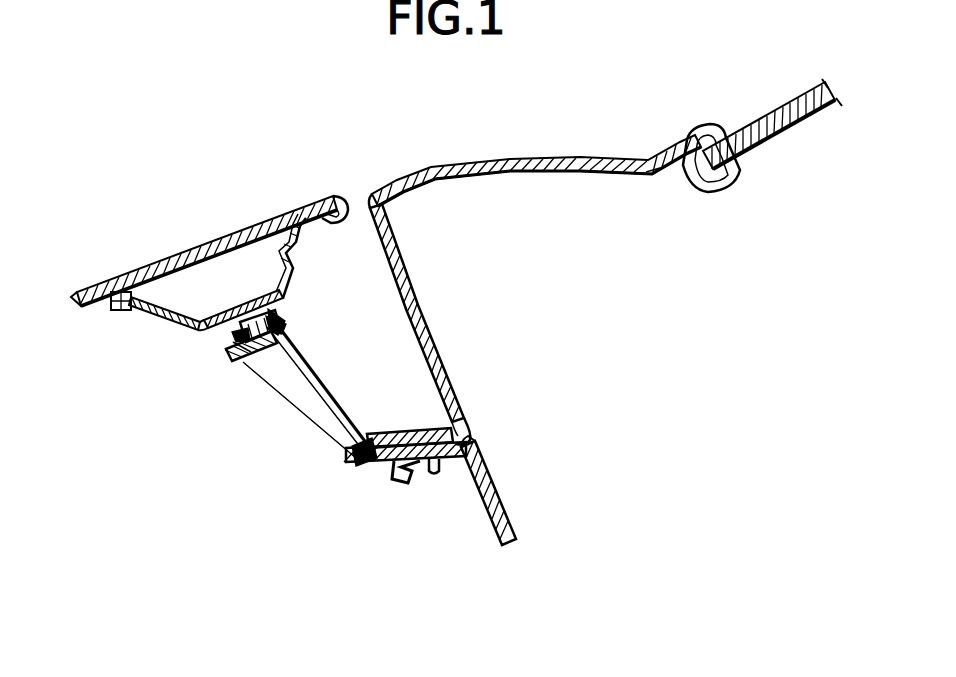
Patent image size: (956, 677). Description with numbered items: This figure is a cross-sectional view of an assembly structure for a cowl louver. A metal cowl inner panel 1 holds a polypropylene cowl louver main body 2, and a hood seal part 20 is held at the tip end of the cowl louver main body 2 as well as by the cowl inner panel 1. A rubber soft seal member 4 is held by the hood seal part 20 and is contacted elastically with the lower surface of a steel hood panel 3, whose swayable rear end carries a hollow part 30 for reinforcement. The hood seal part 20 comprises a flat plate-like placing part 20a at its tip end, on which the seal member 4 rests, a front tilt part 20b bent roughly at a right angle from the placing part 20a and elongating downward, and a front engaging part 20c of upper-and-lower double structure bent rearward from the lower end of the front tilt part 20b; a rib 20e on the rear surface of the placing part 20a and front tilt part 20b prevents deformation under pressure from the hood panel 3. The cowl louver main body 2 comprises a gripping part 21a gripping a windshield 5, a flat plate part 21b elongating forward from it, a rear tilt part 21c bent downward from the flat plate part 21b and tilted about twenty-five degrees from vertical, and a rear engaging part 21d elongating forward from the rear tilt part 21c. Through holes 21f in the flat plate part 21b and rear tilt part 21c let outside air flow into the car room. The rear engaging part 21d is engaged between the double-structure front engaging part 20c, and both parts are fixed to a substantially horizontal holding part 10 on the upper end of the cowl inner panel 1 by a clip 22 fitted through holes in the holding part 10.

The cowl inner panel 1 is at (494, 488).
The cowl louver main body 2 is at (429, 175).
The hood panel 3 is at (213, 237).
The seal member 4 is at (228, 328).
The windshield 5 is at (768, 146).
The holding part 10 is at (448, 460).
The hood seal part 20 is at (310, 368).
The placing part 20a is at (247, 367).
The front tilt part 20b is at (326, 410).
The front engaging part 20c is at (375, 467).
The rib 20e is at (292, 386).
The gripping part 21a is at (688, 131).
The flat plate part 21b is at (650, 169).
The rear tilt part 21c is at (421, 305).
The rear engaging part 21d is at (421, 430).
The through holes 21f is at (447, 361).
The clip 22 is at (422, 470).
The hollow part 30 is at (208, 272).